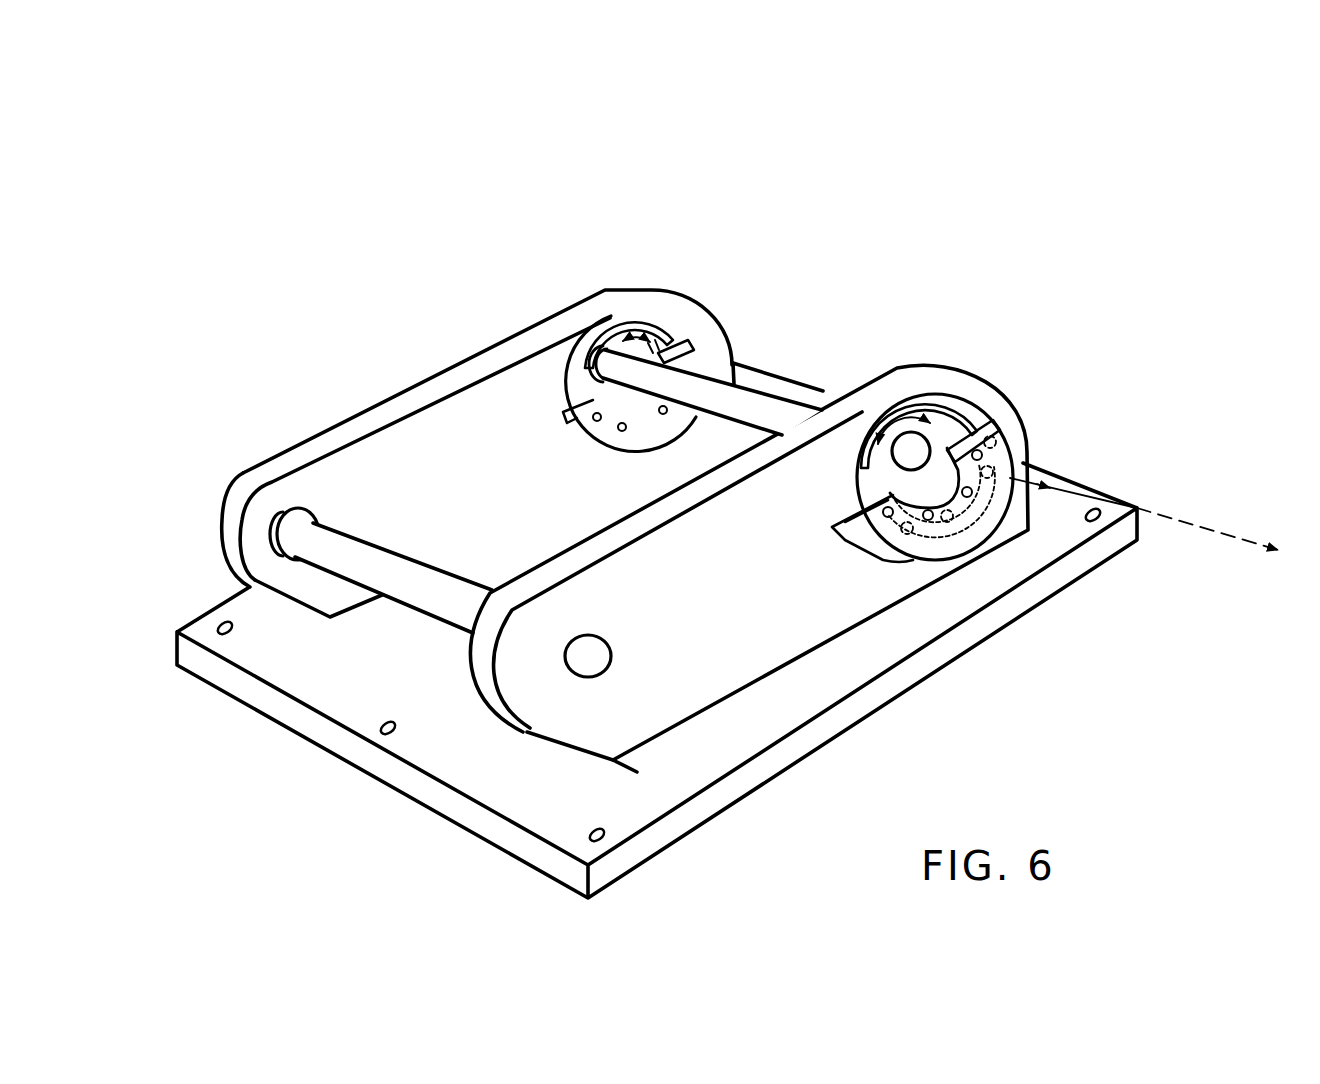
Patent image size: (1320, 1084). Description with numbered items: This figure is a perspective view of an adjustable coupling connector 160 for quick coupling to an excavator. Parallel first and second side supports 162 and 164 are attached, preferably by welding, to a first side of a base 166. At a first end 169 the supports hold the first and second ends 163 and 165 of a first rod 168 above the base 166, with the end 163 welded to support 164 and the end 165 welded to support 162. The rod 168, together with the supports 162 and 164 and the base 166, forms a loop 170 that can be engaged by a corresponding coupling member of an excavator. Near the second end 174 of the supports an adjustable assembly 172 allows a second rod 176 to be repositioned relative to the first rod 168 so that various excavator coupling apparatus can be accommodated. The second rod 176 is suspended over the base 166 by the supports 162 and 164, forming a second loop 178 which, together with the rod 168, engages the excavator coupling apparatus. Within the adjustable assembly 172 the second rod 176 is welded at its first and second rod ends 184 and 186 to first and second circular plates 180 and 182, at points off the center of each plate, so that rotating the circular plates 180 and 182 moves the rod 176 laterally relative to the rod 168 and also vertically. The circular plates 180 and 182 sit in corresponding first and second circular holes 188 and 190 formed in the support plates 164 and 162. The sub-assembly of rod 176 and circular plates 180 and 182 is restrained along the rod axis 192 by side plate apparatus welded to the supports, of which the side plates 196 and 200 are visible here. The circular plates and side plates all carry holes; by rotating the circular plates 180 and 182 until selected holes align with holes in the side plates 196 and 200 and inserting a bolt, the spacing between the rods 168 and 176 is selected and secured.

The adjustable coupling connector 160 is at (1142, 288).
The second side support 162 is at (778, 641).
The first end of first rod 163 is at (322, 505).
The first side support 164 is at (313, 417).
The second end of first rod 165 is at (592, 658).
The base 166 is at (792, 745).
The first rod 168 is at (442, 587).
The first end of the supports 169 is at (205, 522).
The loop 170 is at (415, 627).
The adjustable assembly 172 is at (778, 350).
The second end of the supports 174 is at (580, 282).
The second rod 176 is at (747, 397).
The second loop 178 is at (810, 392).
The first circular plate 180 is at (663, 342).
The second circular plate 182 is at (916, 450).
The first rod end 184 is at (608, 345).
The second rod end 186 is at (913, 443).
The first circular hole 188 is at (640, 320).
The second circular hole 190 is at (925, 402).
The rod axis 192 is at (1144, 514).
The side plate 196 is at (693, 345).
The side plate 200 is at (997, 475).